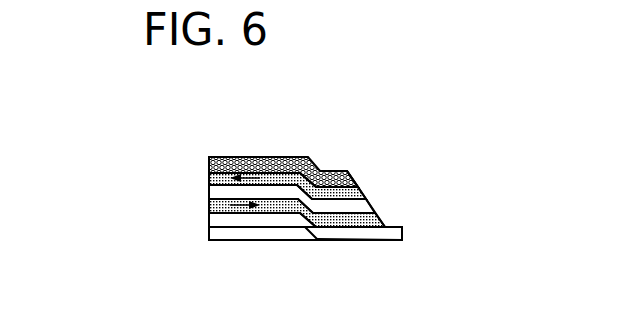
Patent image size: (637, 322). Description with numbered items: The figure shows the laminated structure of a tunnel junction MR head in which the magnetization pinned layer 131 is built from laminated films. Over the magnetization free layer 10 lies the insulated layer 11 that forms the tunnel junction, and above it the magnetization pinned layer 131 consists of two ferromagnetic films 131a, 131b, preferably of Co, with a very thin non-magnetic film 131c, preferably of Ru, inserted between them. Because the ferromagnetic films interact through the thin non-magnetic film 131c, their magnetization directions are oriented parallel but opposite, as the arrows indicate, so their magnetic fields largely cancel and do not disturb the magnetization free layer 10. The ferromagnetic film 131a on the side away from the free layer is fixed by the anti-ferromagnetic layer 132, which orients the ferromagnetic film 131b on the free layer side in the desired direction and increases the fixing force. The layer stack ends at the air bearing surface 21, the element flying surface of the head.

The magnetization free layer 10 is at (253, 234).
The insulated layer 11 is at (358, 234).
The air bearing surface 21 is at (238, 157).
The anti-ferromagnetic layer 132 is at (333, 174).
The magnetization pinned layer 131 is at (201, 188).
The ferromagnetic film 131a is at (210, 173).
The non-magnetic film 131c is at (210, 192).
The ferromagnetic film 131b is at (210, 205).